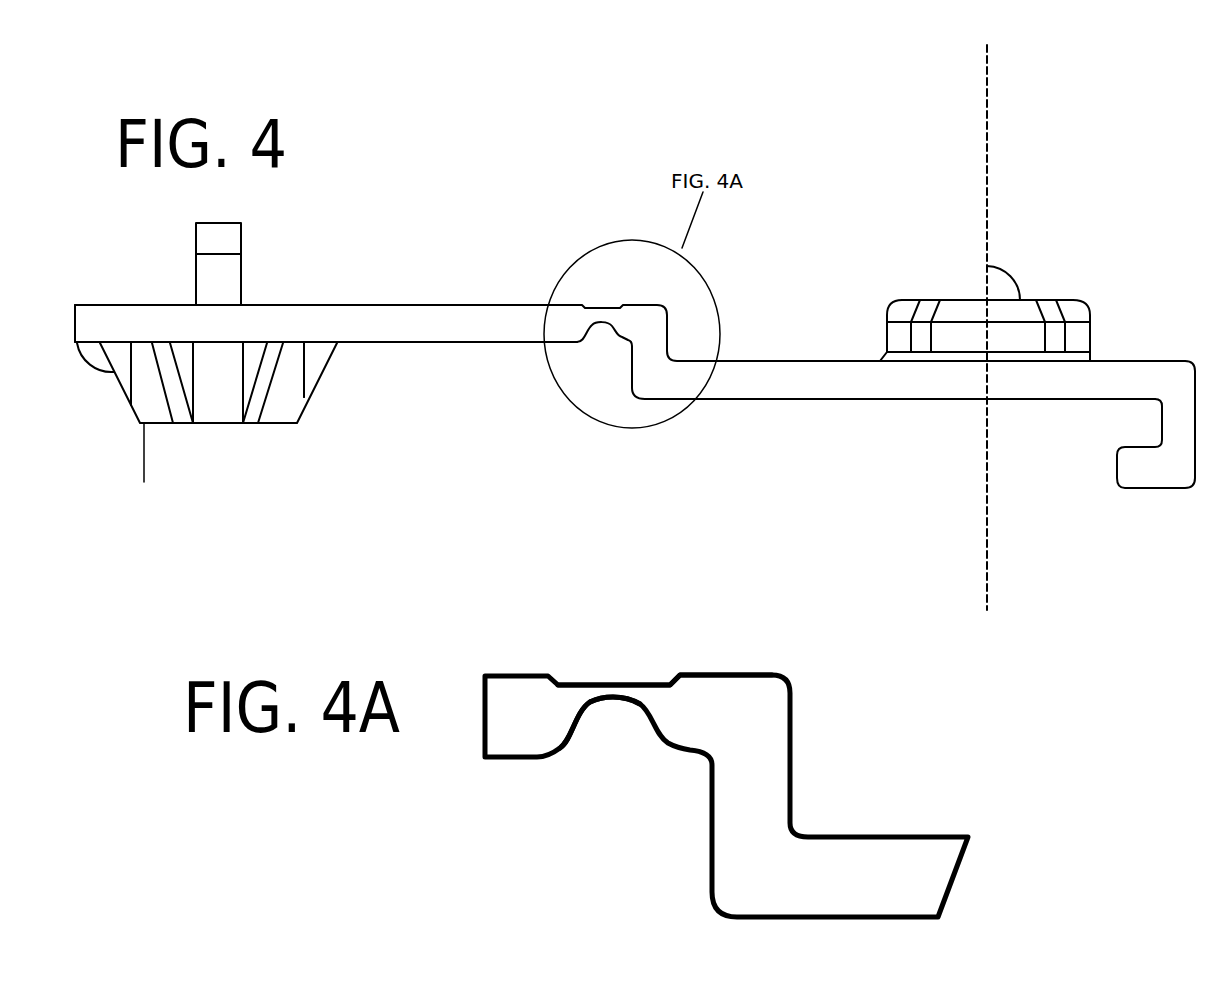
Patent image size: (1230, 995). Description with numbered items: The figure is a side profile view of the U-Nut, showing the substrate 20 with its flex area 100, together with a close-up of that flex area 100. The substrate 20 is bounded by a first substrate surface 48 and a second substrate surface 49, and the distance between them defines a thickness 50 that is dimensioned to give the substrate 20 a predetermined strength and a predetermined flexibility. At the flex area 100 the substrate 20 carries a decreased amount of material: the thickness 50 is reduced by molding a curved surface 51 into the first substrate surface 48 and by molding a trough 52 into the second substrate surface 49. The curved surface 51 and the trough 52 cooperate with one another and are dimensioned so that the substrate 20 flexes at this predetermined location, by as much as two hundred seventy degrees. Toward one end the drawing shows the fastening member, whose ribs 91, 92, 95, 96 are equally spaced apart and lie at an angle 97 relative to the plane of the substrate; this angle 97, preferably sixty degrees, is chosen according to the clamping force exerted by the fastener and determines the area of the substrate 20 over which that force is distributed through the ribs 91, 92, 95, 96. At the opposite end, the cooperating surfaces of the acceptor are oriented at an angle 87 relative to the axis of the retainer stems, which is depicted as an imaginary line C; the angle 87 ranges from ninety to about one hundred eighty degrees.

In FIG. 4, the substrate 20 is at (635, 370).
In FIG. 4, the first substrate surface 48 is at (407, 342).
In FIG. 4, the second substrate surface 49 is at (428, 305).
In FIG. 4A, the second substrate surface 49 is at (727, 675).
In FIG. 4, the thickness 50 is at (480, 335).
In FIG. 4A, the curved surface 51 is at (613, 700).
In FIG. 4A, the trough 52 is at (613, 697).
In FIG. 4, the angle 87 is at (1013, 278).
In FIG. 4, the rib 91 is at (258, 403).
In FIG. 4, the rib 92 is at (315, 368).
In FIG. 4, the rib 95 is at (120, 352).
In FIG. 4, the rib 96 is at (177, 403).
In FIG. 4, the angle 97 is at (88, 366).
In FIG. 4, the flex area 100 is at (602, 330).
In FIG. 4A, the flex area 100 is at (614, 785).
In FIG. 4, the imaginary line C is at (988, 130).